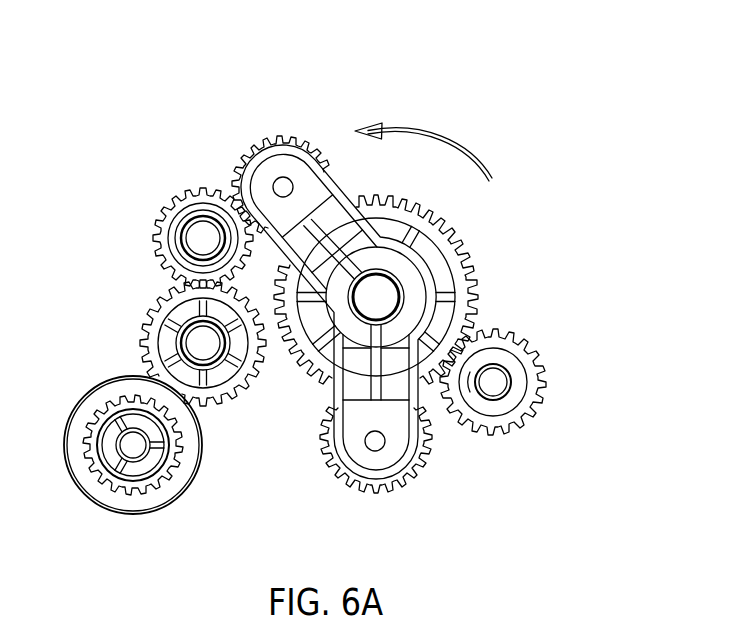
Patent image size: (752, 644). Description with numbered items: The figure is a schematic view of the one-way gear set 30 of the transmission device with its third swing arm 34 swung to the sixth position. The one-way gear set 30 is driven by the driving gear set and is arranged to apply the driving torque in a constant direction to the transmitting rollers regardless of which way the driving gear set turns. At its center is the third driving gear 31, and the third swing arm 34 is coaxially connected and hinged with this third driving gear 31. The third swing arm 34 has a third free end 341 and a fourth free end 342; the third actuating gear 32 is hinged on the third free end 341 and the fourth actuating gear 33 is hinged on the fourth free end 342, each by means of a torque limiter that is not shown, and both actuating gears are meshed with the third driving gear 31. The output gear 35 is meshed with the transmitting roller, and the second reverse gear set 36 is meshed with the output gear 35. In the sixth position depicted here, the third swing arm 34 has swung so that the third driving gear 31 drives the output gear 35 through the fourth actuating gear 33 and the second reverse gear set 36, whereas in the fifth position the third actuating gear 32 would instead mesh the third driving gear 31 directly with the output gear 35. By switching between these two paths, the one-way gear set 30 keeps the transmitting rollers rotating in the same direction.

The one-way gear set 30 is at (533, 307).
The third driving gear 31 is at (477, 286).
The third actuating gear 32 is at (423, 447).
The fourth actuating gear 33 is at (307, 139).
The third swing arm 34 is at (412, 283).
The third free end 341 is at (371, 467).
The fourth free end 342 is at (265, 168).
The output gear 35 is at (152, 315).
The second reverse gear set 36 is at (170, 203).